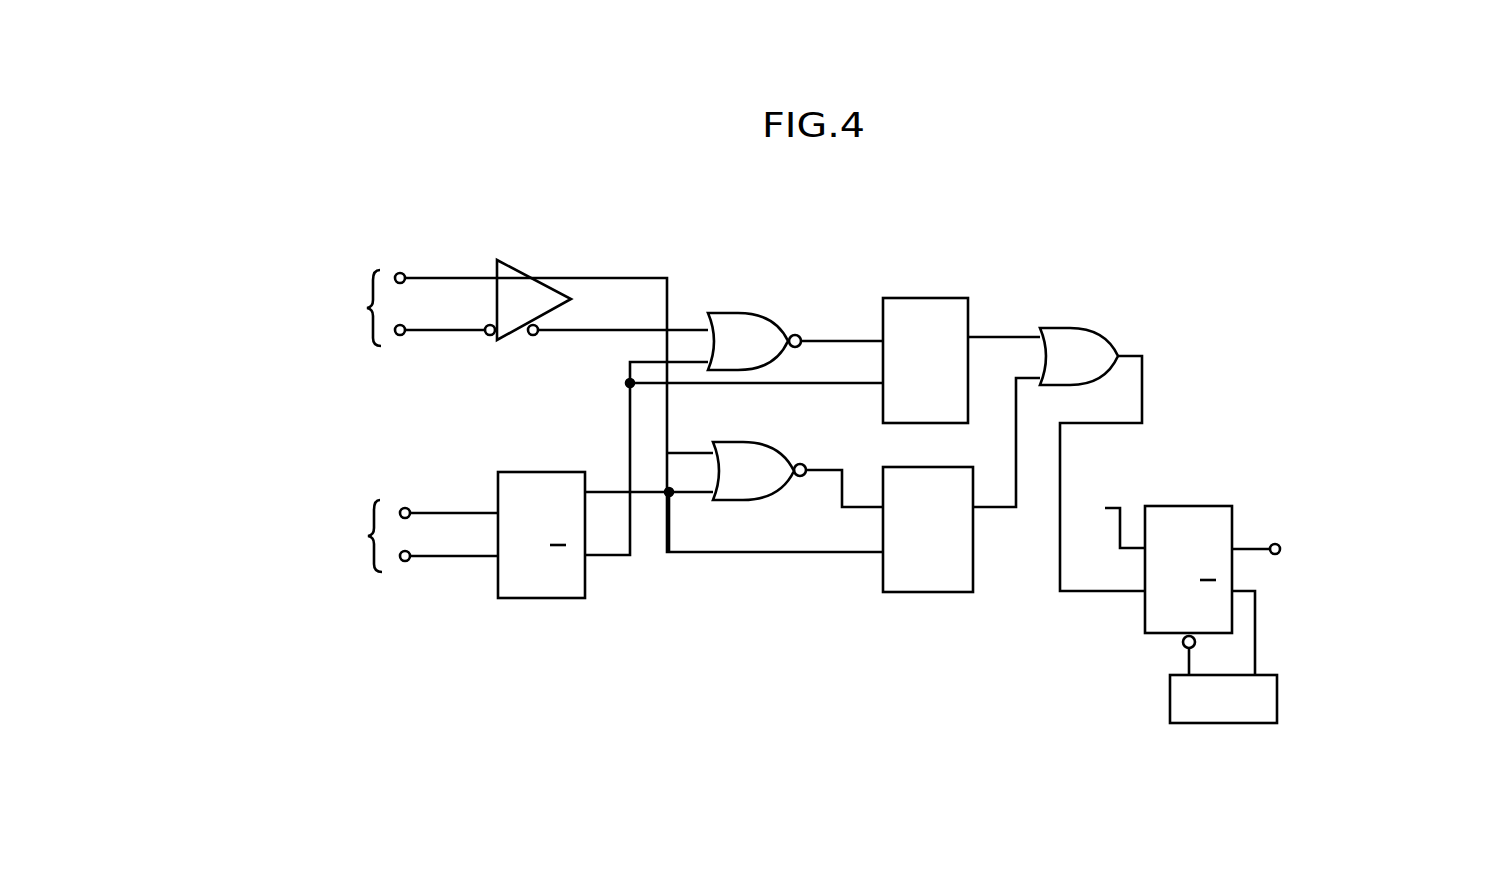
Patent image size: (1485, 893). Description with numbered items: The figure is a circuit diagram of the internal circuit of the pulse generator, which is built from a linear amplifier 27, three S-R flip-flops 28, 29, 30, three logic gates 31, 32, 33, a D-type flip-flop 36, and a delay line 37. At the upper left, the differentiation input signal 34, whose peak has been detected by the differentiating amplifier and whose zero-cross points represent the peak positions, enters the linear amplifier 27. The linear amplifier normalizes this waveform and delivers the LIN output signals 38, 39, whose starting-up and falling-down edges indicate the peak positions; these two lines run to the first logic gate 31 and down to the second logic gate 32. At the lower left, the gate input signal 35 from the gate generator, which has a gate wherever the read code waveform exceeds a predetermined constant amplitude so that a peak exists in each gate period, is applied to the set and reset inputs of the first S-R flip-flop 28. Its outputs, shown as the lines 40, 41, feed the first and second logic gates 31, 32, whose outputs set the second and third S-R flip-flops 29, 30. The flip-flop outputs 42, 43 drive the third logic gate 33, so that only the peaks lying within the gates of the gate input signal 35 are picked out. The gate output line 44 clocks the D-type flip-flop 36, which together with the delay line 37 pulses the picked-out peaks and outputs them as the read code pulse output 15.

The read code pulse output 15 is at (1313, 549).
The linear amplifier LIN 27 is at (524, 270).
The S-R flip-flop FF1 28 is at (534, 436).
The S-R flip-flop FF2 29 is at (950, 275).
The S-R flip-flop FF3 30 is at (975, 520).
The logic gate NR1 31 is at (780, 323).
The logic gate NR2 32 is at (792, 463).
The logic gate NR3 33 is at (1115, 346).
The differentiation input signal 34 is at (296, 305).
The gate input signal 35 is at (335, 533).
The D-type flip-flop FF4 36 is at (1232, 506).
The delay line Dely 37 is at (1277, 697).
The LIN output signal 38 is at (588, 273).
The LIN output signal 39 is at (585, 330).
The signal line 40 is at (591, 491).
The signal line 41 is at (600, 560).
The signal line 42 is at (986, 337).
The signal line 43 is at (990, 502).
The signal line 44 is at (1142, 403).